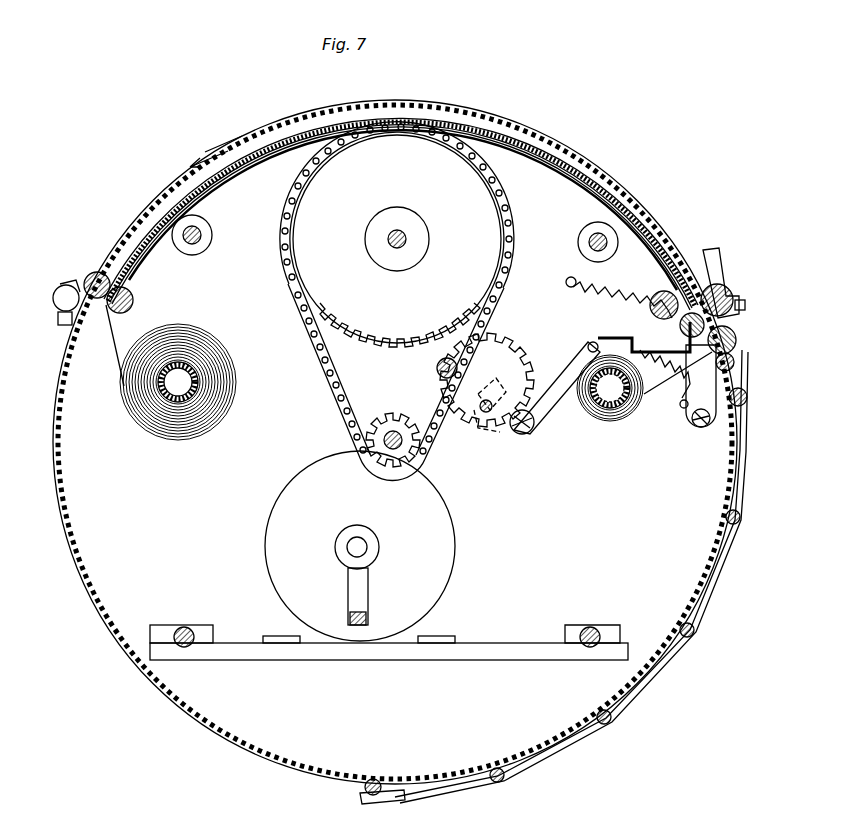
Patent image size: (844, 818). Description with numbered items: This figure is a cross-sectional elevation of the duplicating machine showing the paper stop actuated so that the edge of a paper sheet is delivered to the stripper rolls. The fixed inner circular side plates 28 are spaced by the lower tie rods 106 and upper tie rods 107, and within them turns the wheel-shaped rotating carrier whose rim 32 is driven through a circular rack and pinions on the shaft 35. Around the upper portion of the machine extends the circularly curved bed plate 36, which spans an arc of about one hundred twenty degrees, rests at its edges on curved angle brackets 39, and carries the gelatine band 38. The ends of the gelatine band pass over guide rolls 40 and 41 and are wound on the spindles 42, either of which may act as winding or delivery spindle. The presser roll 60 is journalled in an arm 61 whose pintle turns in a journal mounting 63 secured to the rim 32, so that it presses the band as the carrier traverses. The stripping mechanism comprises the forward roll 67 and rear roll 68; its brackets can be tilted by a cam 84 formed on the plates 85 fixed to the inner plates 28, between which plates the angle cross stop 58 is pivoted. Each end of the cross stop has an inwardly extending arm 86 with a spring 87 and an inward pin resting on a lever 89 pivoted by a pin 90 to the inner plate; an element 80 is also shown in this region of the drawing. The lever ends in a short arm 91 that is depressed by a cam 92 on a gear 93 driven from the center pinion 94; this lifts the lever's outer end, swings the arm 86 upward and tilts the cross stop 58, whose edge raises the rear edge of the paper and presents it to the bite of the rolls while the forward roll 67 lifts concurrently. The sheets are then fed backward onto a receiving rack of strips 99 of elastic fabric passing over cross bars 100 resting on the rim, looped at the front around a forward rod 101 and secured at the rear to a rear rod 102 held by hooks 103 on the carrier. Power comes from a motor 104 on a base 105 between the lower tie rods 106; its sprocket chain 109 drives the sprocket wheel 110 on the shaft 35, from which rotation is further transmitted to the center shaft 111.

The inner circular side plates 28 is at (562, 526).
The rim 32 is at (60, 348).
The shaft 35 is at (406, 243).
The curved bed plate 36 is at (228, 178).
The gelatine band 38 is at (110, 332).
The curved angle brackets 39 is at (585, 184).
The guide roll 40 is at (660, 300).
The guide roll 41 is at (135, 300).
The spindles 42 is at (200, 392).
The angle cross stop 58 is at (692, 354).
The roller 60 is at (97, 272).
The arm 61 is at (75, 290).
The journal mounting 63 is at (58, 320).
The forward roll 67 is at (733, 316).
The rear roll 68 is at (736, 340).
The pin 80 is at (592, 342).
The cam 84 is at (725, 285).
The plates 85 is at (748, 400).
The inwardly extending arm 86 is at (635, 336).
The spring 87 is at (668, 398).
The lever 89 is at (562, 388).
The pin 90 is at (505, 399).
The short arm 91 is at (488, 433).
The cam 92 is at (477, 434).
The gear 93 is at (498, 370).
The center pinion 94 is at (372, 425).
The strips of elastic fabric 99 is at (730, 472).
The cross bars 100 is at (741, 518).
The forward rod 101 is at (735, 365).
The rear rod 102 is at (365, 789).
The hooks 103 is at (395, 800).
The motor 104 is at (440, 578).
The base 105 is at (316, 662).
The lower tie rods 106 is at (180, 646).
The upper tie rods 107 is at (212, 236).
The sprocket chain 109 is at (498, 302).
The sprocket wheel 110 is at (397, 241).
The center shaft 111 is at (385, 450).